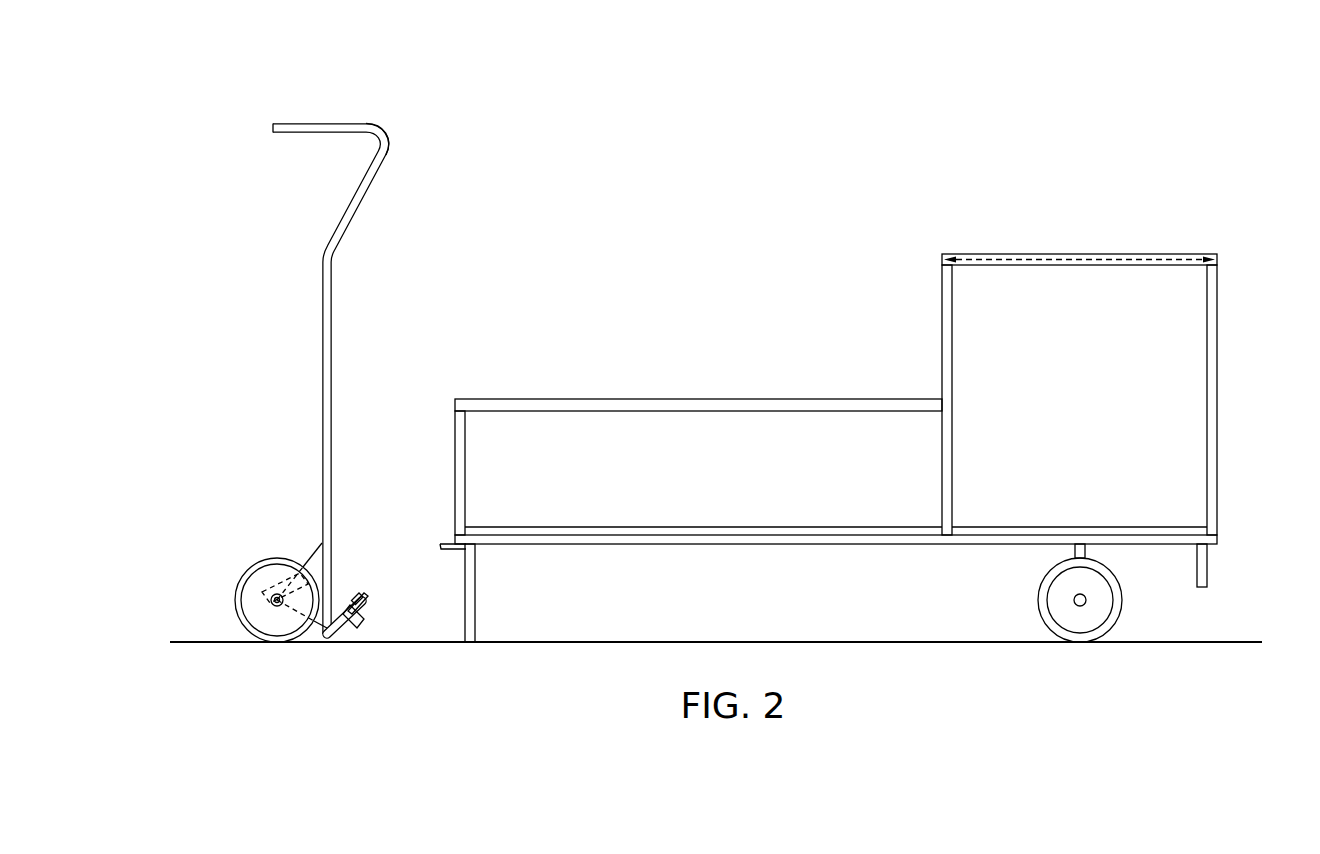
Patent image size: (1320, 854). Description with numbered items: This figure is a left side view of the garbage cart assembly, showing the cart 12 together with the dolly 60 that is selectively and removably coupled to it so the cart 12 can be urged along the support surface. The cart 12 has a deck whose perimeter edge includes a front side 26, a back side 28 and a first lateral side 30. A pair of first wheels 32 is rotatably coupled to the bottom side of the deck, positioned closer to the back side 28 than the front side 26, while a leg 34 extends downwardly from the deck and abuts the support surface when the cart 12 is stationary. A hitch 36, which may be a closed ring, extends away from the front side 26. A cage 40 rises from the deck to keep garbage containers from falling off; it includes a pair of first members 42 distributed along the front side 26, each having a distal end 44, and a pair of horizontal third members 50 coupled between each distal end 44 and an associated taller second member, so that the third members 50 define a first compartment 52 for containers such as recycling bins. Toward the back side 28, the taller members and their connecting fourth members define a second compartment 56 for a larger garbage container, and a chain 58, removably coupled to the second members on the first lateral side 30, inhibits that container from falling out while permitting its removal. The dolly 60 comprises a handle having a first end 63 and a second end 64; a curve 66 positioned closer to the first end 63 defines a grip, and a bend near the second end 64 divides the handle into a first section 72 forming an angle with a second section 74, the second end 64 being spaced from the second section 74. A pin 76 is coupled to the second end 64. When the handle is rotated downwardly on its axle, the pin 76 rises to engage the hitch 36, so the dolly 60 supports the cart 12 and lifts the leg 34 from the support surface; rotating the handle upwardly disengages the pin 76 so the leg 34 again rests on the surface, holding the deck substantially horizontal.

The cart 12 is at (814, 431).
The front side 26 is at (458, 533).
The back side 28 is at (1217, 545).
The first lateral side 30 is at (802, 545).
The first wheels 32 is at (1043, 610).
The leg 34 is at (471, 597).
The hitch 36 is at (441, 549).
The cage 40 is at (809, 343).
The first members 42 is at (457, 447).
The distal end 44 is at (671, 410).
The third members 50 is at (636, 399).
The first compartment 52 is at (762, 458).
The second compartment 56 is at (1072, 318).
The chain 58 is at (1178, 254).
The dolly 60 is at (260, 430).
The first end 63 is at (273, 128).
The second end 64 is at (356, 598).
The curve 66 is at (383, 166).
The first section 72 is at (334, 396).
The second section 74 is at (352, 644).
The pin 76 is at (367, 603).